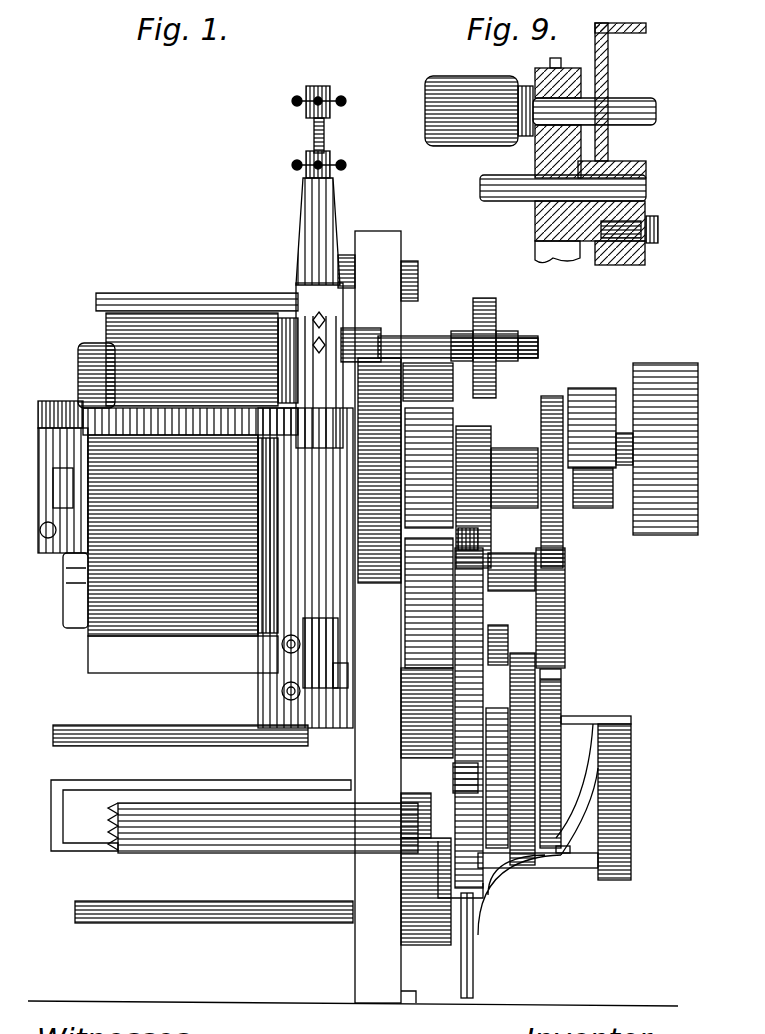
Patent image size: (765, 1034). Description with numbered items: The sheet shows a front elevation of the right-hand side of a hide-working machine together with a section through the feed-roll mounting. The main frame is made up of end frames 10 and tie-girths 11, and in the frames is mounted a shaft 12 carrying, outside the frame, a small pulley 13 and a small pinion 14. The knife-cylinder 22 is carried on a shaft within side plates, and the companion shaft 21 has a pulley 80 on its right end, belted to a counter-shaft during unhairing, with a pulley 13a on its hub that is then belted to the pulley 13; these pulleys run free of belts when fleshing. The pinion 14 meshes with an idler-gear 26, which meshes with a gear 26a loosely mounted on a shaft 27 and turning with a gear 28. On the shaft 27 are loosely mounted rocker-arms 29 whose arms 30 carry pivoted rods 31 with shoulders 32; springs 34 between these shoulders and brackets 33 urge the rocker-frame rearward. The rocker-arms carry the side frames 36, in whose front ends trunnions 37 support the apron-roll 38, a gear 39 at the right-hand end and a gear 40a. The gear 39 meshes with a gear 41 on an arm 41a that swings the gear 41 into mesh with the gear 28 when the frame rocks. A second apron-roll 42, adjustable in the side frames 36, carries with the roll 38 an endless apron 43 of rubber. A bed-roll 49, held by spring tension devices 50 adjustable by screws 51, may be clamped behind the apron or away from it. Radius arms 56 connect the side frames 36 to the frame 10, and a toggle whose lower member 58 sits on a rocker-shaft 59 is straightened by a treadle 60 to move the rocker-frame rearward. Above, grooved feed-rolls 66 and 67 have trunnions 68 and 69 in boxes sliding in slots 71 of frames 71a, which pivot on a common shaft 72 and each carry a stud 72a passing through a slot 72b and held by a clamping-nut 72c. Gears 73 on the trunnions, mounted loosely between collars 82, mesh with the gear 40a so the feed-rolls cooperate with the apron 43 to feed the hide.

In FIG. 1, the end frame 10 is at (385, 617).
In FIG. 9, the end frame 10 is at (600, 50).
In FIG. 1, the tie-girth 11 is at (70, 828).
In FIG. 1, the shaft 12 is at (545, 870).
In FIG. 1, the small pulley 13 is at (610, 850).
In FIG. 1, the pulley 13a is at (580, 382).
In FIG. 1, the small pinion 14 is at (520, 852).
In FIG. 1, the shaft 21 is at (615, 458).
In FIG. 1, the knife-cylinder 22 is at (45, 395).
In FIG. 1, the idler-gear 26 is at (465, 890).
In FIG. 1, the gear 26a is at (553, 700).
In FIG. 1, the shaft 27 is at (165, 725).
In FIG. 1, the gear 28 is at (553, 667).
In FIG. 1, the rocker-arm 29 is at (398, 662).
In FIG. 1, the arm 30 is at (425, 570).
In FIG. 1, the rod 31 is at (465, 950).
In FIG. 1, the shoulder 32 is at (470, 566).
In FIG. 1, the bracket 33 is at (475, 892).
In FIG. 1, the spring 34 is at (447, 768).
In FIG. 1, the side frame 36 is at (314, 682).
In FIG. 1, the trunnion 37 is at (470, 762).
In FIG. 1, the apron-roll 38 is at (55, 485).
In FIG. 1, the gear 39 is at (545, 388).
In FIG. 1, the gear 40a is at (483, 470).
In FIG. 1, the gear 41 is at (557, 607).
In FIG. 1, the arm 41a is at (503, 583).
In FIG. 1, the second apron-roll 42 is at (58, 577).
In FIG. 1, the endless apron 43 is at (143, 610).
In FIG. 1, the bed-roll 49 is at (32, 522).
In FIG. 1, the spring tension device 50 is at (274, 640).
In FIG. 1, the screw 51 is at (274, 682).
In FIG. 1, the radius arm 56 is at (332, 668).
In FIG. 1, the lower toggle member 58 is at (393, 790).
In FIG. 1, the rocker-shaft 59 is at (290, 916).
In FIG. 1, the treadle 60 is at (245, 815).
In FIG. 1, the feed-roll 66 is at (110, 318).
In FIG. 1, the feed-roll 67 is at (70, 345).
In FIG. 9, the feed-roll 67 is at (455, 72).
In FIG. 1, the trunnion 68 is at (408, 336).
In FIG. 1, the trunnion 69 is at (428, 390).
In FIG. 9, the trunnion 69 is at (620, 100).
In FIG. 1, the slot 71 is at (292, 292).
In FIG. 9, the frame 71a is at (527, 228).
In FIG. 1, the shaft 72 is at (175, 296).
In FIG. 9, the shaft 72 is at (492, 186).
In FIG. 9, the stud 72a is at (600, 258).
In FIG. 9, the slot 72b is at (630, 235).
In FIG. 9, the clamping-nut 72c is at (648, 212).
In FIG. 1, the gear 73 is at (477, 292).
In FIG. 1, the pulley 80 is at (662, 356).
In FIG. 1, the collar 82 is at (457, 322).